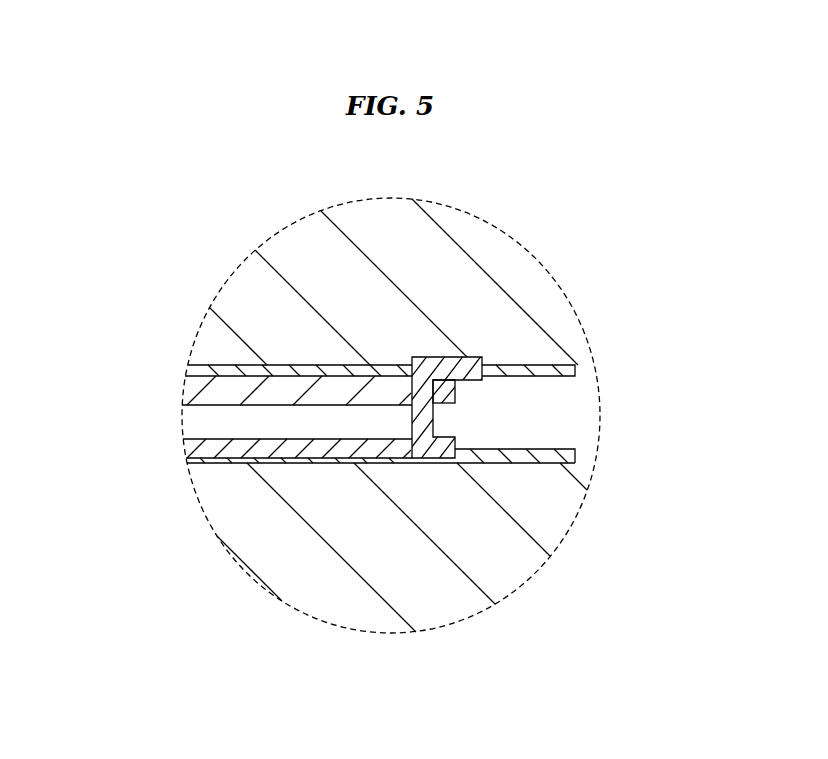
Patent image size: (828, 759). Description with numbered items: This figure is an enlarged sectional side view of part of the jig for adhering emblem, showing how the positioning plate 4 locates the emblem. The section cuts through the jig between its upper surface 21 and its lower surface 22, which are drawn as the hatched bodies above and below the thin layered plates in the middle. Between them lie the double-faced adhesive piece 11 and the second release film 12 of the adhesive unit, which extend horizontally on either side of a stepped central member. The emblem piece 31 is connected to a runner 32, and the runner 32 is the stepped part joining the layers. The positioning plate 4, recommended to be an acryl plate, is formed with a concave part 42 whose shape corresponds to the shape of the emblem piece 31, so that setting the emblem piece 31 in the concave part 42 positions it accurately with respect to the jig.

The double-faced adhesive piece 11 is at (188, 387).
The second release film 12 is at (572, 372).
The upper surface 21 is at (469, 288).
The lower surface 22 is at (237, 533).
The emblem piece 31 is at (193, 442).
The runner 32 is at (467, 372).
The positioning plate 4 is at (574, 447).
The concave part 42 is at (393, 463).